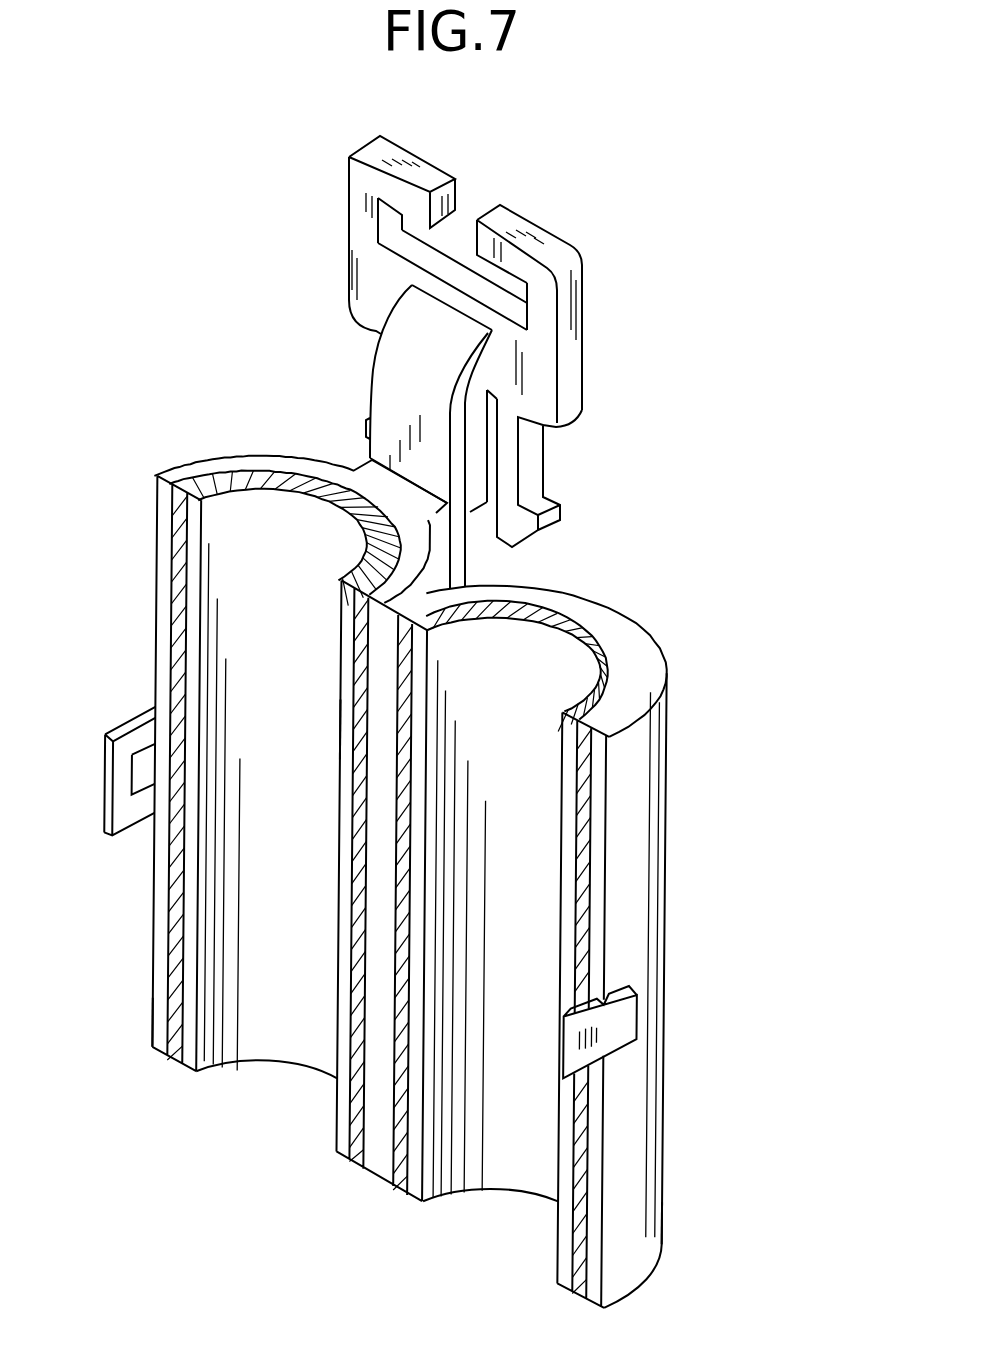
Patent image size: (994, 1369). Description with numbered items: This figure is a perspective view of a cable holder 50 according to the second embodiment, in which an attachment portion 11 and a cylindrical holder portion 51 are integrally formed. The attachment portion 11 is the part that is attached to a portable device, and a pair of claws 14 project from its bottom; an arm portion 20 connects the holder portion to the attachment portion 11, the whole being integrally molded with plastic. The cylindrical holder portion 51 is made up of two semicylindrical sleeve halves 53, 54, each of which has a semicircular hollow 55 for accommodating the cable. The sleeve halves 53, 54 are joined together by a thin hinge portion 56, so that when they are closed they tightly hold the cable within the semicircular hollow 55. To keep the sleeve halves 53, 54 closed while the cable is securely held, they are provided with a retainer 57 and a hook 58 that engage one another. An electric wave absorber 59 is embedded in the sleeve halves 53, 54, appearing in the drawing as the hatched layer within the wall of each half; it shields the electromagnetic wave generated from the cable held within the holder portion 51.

The attachment portion 11 is at (362, 227).
The claws 14 is at (533, 452).
The arm portion 20 is at (408, 357).
The cable holder 50 is at (432, 857).
The cylindrical holder portion 51 is at (668, 792).
The sleeve half 53 is at (153, 991).
The sleeve half 54 is at (643, 1252).
The semicircular hollow 55 is at (270, 1030).
The hinge portion 56 is at (383, 703).
The retainer 57 is at (117, 776).
The hook 58 is at (604, 1035).
The electric wave absorber 59 is at (252, 472).